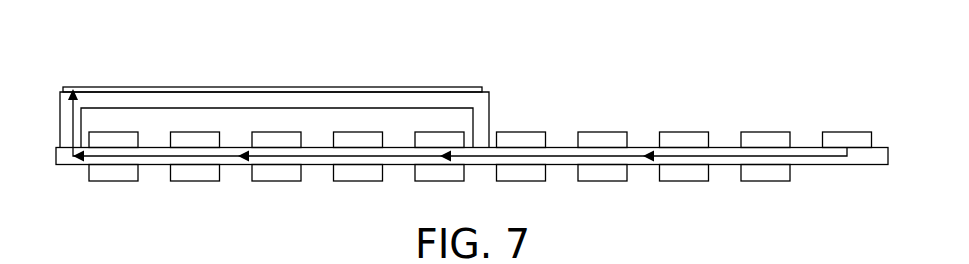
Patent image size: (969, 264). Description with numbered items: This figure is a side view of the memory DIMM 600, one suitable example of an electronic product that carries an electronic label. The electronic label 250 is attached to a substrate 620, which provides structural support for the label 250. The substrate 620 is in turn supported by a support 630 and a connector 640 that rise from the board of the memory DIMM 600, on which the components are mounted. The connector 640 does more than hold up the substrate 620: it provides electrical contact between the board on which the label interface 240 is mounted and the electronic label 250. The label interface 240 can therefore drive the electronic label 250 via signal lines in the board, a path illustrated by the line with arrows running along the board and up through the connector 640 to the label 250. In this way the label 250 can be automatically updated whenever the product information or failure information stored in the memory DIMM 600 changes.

The memory DIMM 600 is at (809, 58).
The electronic label 250 is at (300, 87).
The substrate 620 is at (489, 100).
The support 630 is at (489, 127).
The label interface 240 is at (851, 131).
The connector 640 is at (60, 128).